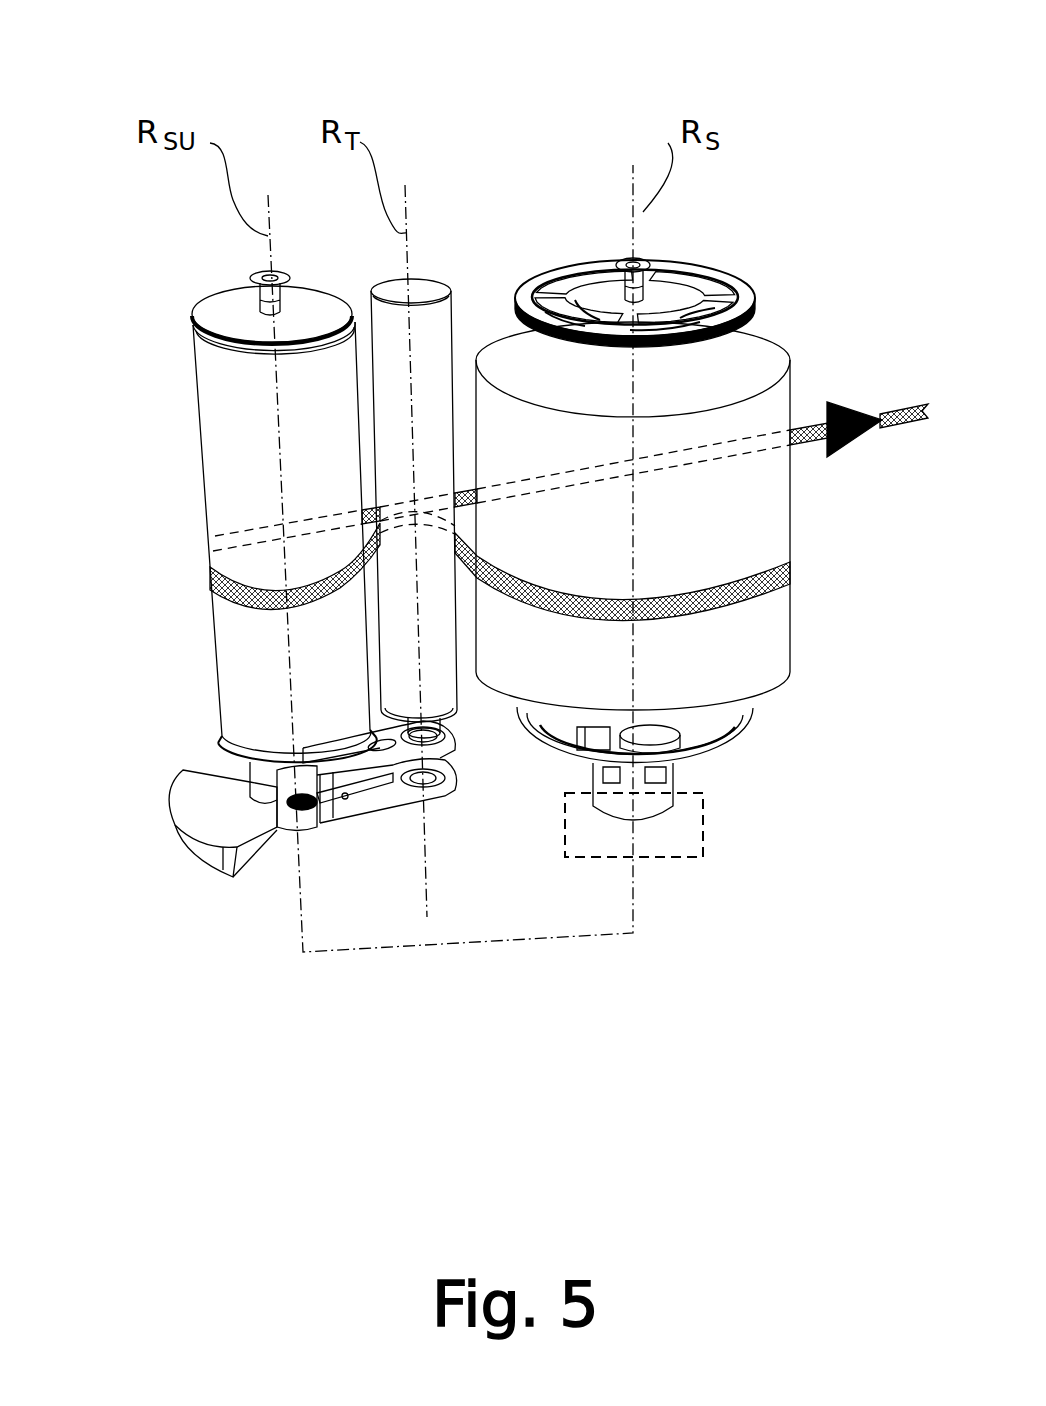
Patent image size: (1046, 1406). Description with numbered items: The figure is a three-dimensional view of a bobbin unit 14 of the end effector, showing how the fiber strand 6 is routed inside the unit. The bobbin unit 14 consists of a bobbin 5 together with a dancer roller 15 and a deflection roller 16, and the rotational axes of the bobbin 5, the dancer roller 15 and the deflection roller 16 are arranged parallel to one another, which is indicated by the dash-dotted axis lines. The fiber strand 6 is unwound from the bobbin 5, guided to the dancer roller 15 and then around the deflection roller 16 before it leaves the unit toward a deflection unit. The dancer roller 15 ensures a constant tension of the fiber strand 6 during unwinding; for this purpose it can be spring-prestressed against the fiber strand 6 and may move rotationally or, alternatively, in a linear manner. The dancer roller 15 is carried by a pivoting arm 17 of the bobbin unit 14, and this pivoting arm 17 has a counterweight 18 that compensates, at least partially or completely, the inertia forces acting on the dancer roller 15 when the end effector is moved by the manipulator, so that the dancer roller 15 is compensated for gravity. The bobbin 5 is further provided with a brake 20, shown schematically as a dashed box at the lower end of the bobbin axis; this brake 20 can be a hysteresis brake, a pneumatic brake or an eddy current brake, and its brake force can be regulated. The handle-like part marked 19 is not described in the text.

The bobbin unit 14 is at (150, 85).
The bobbin 5 is at (795, 295).
The fiber strand 6 is at (885, 408).
The dancer roller 15 is at (463, 272).
The deflection roller 16 is at (178, 420).
The pivoting arm 17 is at (367, 797).
The counterweight 18 is at (357, 812).
The lever 19 is at (200, 853).
The brake 20 is at (673, 857).